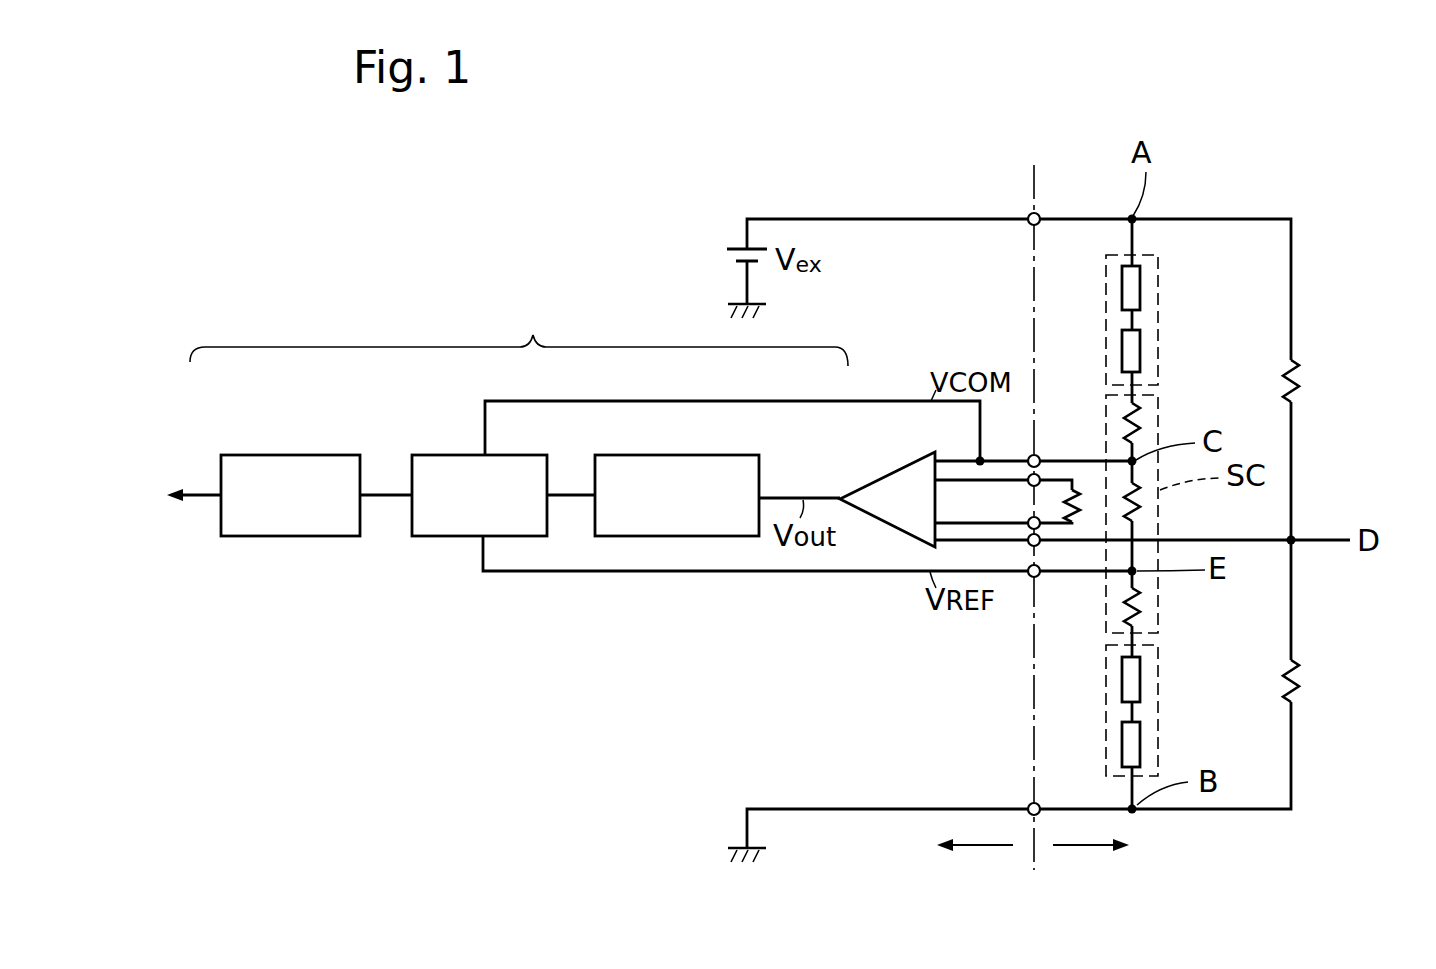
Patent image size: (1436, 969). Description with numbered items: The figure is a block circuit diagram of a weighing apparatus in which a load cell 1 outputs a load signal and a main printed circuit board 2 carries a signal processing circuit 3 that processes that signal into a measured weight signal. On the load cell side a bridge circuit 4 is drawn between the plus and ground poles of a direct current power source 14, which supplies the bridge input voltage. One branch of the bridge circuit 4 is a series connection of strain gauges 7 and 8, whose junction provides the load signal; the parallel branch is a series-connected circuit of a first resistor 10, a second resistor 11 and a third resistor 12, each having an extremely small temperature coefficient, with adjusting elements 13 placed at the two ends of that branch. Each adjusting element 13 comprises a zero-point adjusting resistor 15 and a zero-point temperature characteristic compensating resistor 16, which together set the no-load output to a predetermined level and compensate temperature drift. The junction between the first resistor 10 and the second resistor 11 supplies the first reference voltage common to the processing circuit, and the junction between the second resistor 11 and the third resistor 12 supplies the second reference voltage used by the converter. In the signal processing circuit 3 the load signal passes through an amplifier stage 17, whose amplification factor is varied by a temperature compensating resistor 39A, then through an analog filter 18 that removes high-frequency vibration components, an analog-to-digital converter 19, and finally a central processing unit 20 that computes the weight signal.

The load cell 1 is at (1105, 846).
The main printed circuit board 2 is at (958, 846).
The signal processing circuit 3 is at (519, 328).
The bridge circuit 4 is at (1246, 210).
The strain gauge 7 is at (1308, 383).
The strain gauge 8 is at (1305, 682).
The first resistor 10 is at (1145, 420).
The second resistor 11 is at (1145, 505).
The third resistor 12 is at (1148, 610).
The adjusting element 13 is at (1160, 292).
The direct current power source 14 is at (722, 256).
The zero-point adjusting resistor 15 is at (1128, 286).
The zero-point temperature characteristic compensating resistor 16 is at (1128, 351).
The amplifier stage 17 is at (890, 473).
The analog filter 18 is at (702, 453).
The analog-to-digital converter 19 is at (442, 453).
The central processing unit 20 is at (295, 453).
The temperature compensating resistor 39A is at (1088, 497).